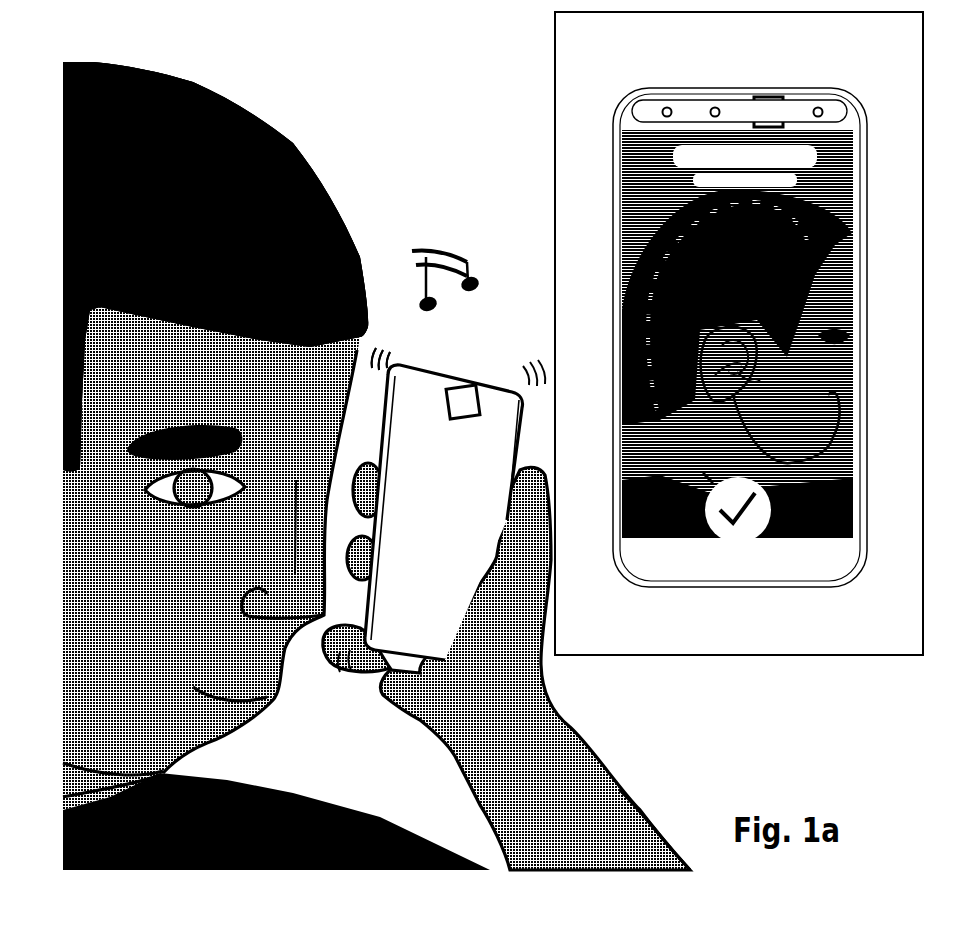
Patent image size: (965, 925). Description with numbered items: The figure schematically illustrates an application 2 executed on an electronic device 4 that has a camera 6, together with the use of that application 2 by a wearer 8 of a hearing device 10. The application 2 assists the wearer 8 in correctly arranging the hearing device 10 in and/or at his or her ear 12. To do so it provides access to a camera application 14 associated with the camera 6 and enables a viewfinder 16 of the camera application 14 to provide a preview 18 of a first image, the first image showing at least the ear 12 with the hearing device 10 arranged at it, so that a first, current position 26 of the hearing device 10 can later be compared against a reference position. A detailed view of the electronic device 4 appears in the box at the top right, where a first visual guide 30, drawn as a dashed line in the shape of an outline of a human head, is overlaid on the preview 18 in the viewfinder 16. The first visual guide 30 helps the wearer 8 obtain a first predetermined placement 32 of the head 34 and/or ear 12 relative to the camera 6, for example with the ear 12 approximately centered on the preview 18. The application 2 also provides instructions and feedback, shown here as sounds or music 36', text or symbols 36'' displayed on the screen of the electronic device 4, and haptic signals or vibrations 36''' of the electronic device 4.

The application 2 is at (610, 166).
The electronic device 4 is at (368, 598).
The camera 6 is at (477, 386).
The wearer 8 is at (305, 127).
The hearing device 10 is at (847, 390).
The ear 12 is at (833, 437).
The camera application 14 is at (610, 210).
The viewfinder 16 is at (737, 334).
The preview 18 is at (802, 550).
The first position 26 is at (788, 373).
The first visual guide 30 is at (852, 296).
The first predetermined placement 32 is at (215, 266).
The head 34 is at (215, 266).
The sounds or music 36' is at (437, 241).
The text or symbols 36'' is at (736, 426).
The haptic signal or vibrations 36''' is at (390, 297).